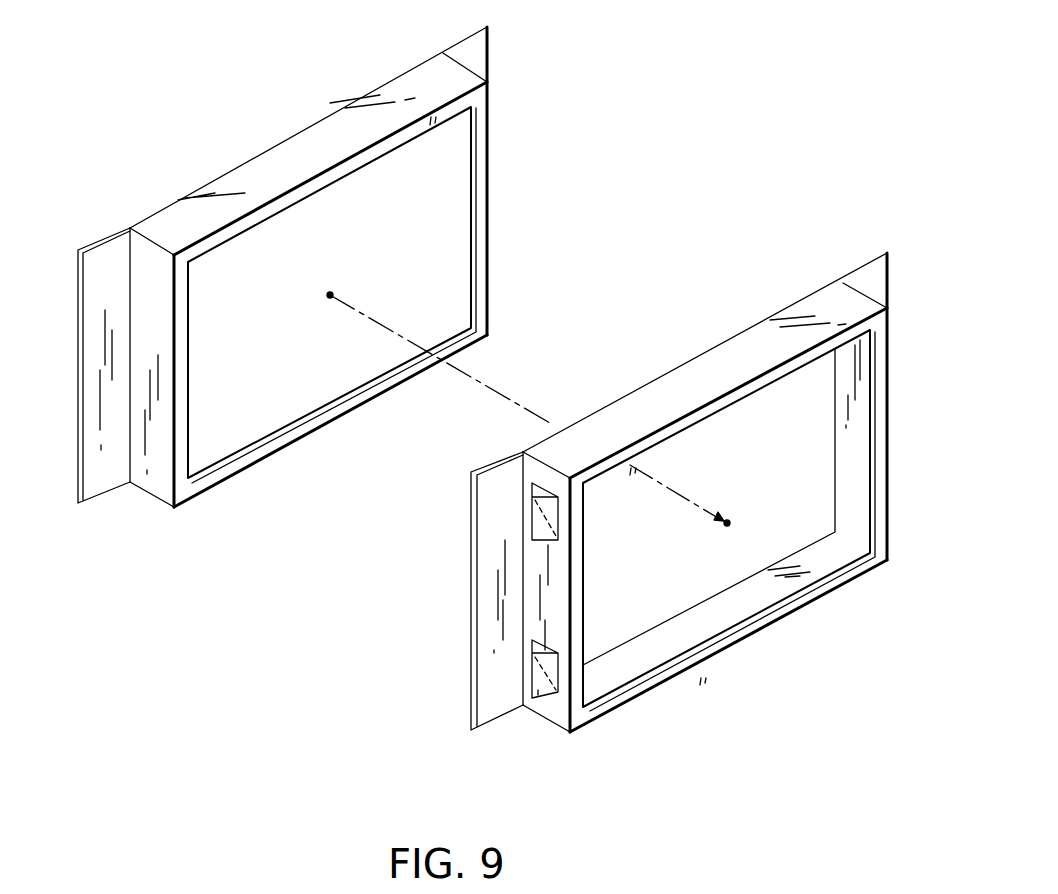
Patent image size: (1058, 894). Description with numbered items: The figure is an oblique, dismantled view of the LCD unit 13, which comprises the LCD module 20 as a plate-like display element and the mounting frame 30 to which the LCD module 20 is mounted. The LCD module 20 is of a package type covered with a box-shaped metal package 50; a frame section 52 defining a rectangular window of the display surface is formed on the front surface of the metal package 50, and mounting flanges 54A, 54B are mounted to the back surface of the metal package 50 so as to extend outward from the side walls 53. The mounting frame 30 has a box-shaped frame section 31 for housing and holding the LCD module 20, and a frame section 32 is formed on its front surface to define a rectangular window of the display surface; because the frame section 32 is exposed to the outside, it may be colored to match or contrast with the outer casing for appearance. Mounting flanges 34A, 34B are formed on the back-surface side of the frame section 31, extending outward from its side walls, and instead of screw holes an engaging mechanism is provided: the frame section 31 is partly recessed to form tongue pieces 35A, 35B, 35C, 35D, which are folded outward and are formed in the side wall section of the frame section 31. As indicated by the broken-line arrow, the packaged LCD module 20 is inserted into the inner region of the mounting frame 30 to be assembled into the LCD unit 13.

The LCD unit 13 is at (668, 451).
The LCD module 20 is at (334, 281).
The mounting frame 30 is at (668, 493).
The box-shaped frame section 31 is at (758, 335).
The frame section 32 is at (782, 610).
The mounting flange 34A is at (493, 515).
The mounting flange 34B is at (870, 283).
The tongue piece 35A is at (552, 520).
The tongue piece 35B is at (892, 345).
The tongue piece 35C is at (543, 697).
The tongue piece 35D is at (890, 503).
The box-shaped metal package 50 is at (327, 281).
The frame section 52 is at (355, 398).
The side wall 53 is at (155, 482).
The mounting flange 54A is at (107, 258).
The mounting flange 54B is at (482, 48).